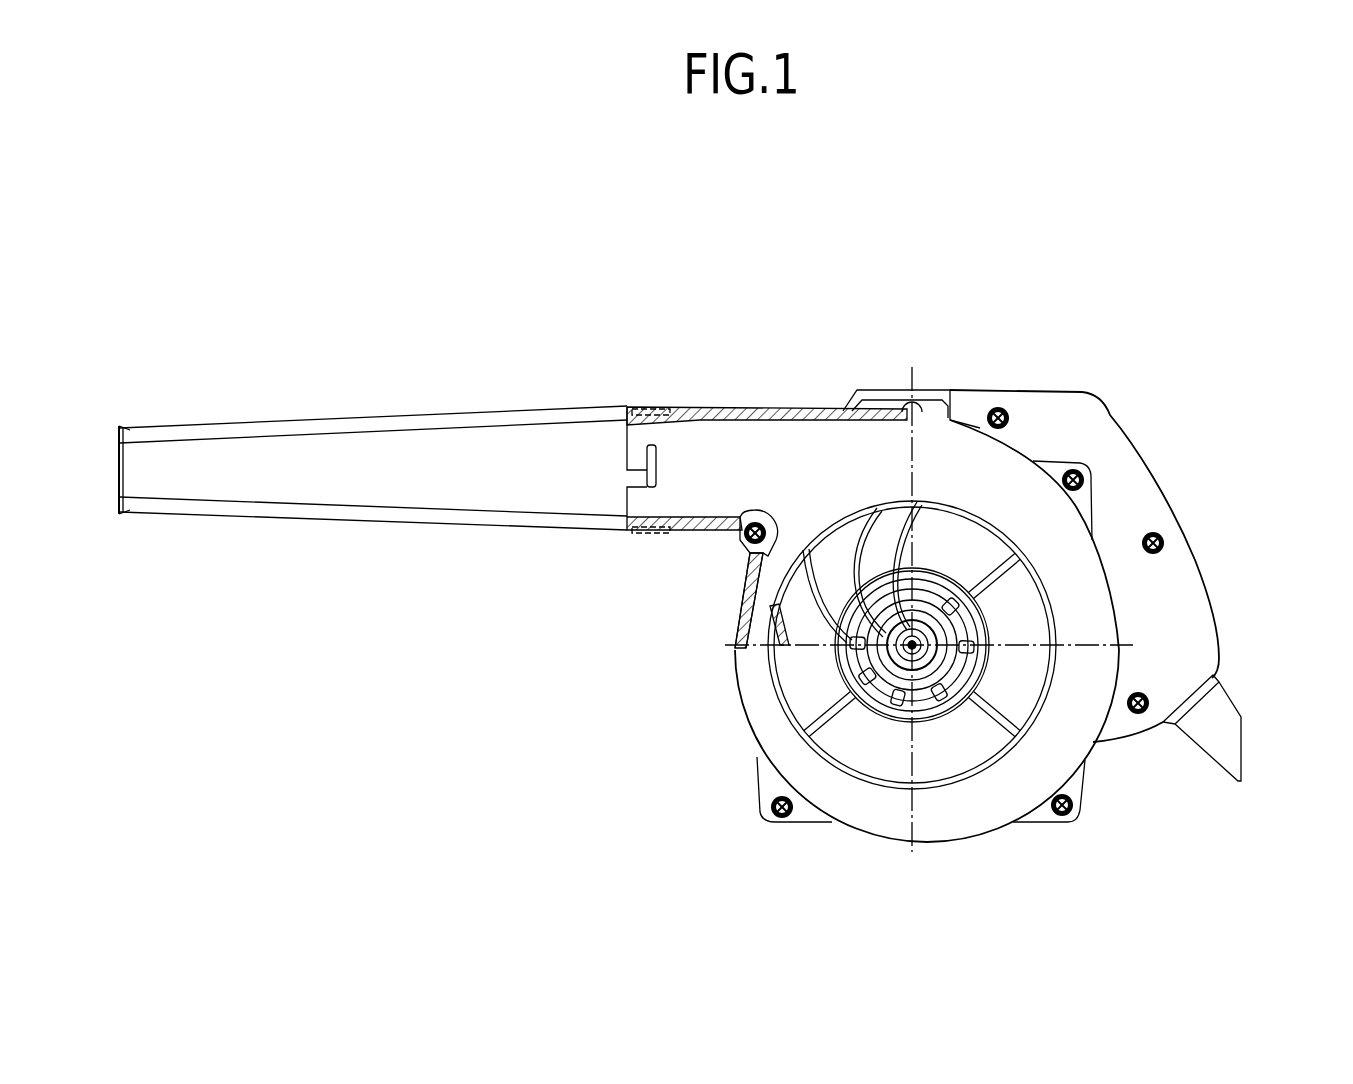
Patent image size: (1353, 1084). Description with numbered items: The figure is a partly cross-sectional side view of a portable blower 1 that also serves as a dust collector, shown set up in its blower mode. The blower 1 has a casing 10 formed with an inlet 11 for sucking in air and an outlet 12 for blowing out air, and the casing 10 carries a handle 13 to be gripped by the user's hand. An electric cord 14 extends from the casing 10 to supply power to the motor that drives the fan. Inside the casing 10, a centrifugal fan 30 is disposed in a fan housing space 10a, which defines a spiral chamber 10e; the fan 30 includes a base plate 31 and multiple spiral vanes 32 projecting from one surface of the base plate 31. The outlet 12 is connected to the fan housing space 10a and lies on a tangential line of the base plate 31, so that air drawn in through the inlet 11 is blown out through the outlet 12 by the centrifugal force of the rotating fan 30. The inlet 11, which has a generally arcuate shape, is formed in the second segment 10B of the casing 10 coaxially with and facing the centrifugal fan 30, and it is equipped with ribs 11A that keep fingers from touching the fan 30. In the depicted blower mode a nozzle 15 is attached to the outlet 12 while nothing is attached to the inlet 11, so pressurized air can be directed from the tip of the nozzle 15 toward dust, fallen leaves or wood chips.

The blower 1 is at (1135, 283).
The casing 10 is at (1000, 475).
The fan housing space 10a is at (893, 540).
The second segment 10B is at (1080, 550).
The spiral chamber 10e is at (858, 463).
The inlet 11 is at (927, 687).
The ribs 11A is at (887, 677).
The outlet 12 is at (598, 418).
The handle 13 is at (1077, 427).
The electric cord 14 is at (1220, 717).
The nozzle 15 is at (420, 417).
The centrifugal fan 30 is at (847, 513).
The base plate 31 is at (835, 557).
The spiral vanes 32 is at (793, 565).